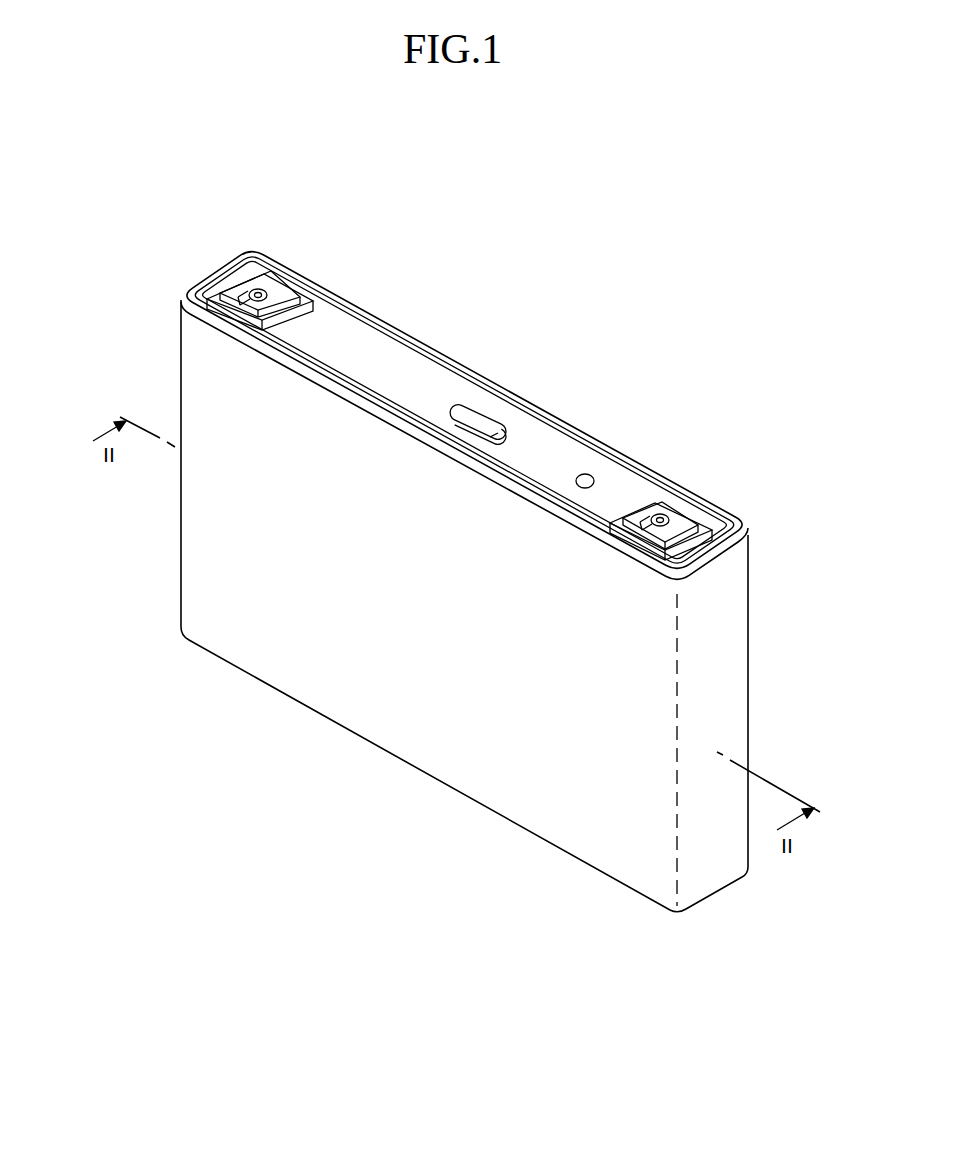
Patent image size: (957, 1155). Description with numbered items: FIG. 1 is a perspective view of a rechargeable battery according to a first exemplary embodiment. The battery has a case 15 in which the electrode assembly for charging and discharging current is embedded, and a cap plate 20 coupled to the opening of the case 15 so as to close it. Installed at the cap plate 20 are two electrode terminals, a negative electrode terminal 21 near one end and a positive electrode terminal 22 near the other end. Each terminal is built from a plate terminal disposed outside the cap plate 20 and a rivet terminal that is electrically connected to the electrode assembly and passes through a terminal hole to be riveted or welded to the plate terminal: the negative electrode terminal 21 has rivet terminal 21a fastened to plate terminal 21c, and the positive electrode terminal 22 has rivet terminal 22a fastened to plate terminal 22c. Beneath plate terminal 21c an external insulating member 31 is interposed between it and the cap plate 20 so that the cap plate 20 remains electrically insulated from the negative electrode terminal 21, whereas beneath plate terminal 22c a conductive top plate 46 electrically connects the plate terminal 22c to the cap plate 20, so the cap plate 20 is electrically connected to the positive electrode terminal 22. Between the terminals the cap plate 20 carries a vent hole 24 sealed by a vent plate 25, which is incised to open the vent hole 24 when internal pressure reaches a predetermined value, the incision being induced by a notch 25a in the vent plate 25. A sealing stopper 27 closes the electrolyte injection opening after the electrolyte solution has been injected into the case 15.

The case 15 is at (388, 718).
The cap plate 20 is at (394, 336).
The negative electrode terminal 21 is at (278, 263).
The rivet terminal 21a is at (254, 291).
The plate terminal 21c is at (284, 295).
The external insulating member 31 is at (304, 302).
The positive electrode terminal 22 is at (712, 535).
The rivet terminal 22a is at (665, 517).
The plate terminal 22c is at (677, 528).
The conductive top plate 46 is at (674, 548).
The vent hole 24 is at (527, 370).
The vent plate 25 is at (483, 423).
The notch 25a is at (492, 437).
The sealing stopper 27 is at (587, 478).